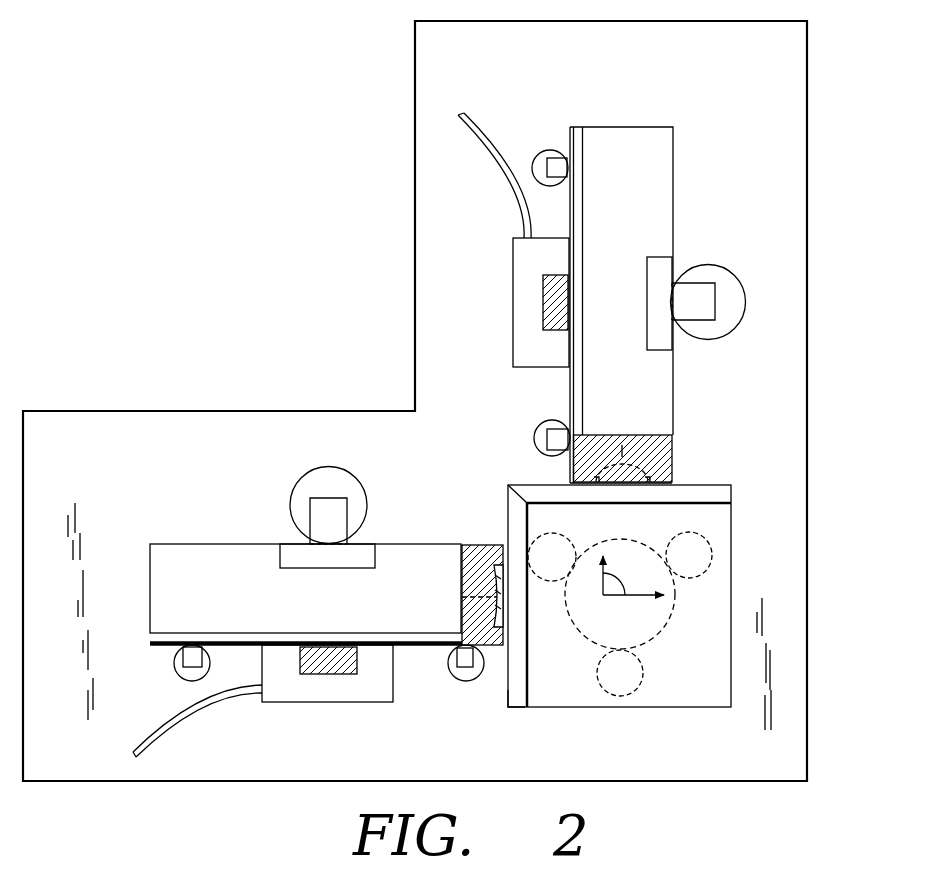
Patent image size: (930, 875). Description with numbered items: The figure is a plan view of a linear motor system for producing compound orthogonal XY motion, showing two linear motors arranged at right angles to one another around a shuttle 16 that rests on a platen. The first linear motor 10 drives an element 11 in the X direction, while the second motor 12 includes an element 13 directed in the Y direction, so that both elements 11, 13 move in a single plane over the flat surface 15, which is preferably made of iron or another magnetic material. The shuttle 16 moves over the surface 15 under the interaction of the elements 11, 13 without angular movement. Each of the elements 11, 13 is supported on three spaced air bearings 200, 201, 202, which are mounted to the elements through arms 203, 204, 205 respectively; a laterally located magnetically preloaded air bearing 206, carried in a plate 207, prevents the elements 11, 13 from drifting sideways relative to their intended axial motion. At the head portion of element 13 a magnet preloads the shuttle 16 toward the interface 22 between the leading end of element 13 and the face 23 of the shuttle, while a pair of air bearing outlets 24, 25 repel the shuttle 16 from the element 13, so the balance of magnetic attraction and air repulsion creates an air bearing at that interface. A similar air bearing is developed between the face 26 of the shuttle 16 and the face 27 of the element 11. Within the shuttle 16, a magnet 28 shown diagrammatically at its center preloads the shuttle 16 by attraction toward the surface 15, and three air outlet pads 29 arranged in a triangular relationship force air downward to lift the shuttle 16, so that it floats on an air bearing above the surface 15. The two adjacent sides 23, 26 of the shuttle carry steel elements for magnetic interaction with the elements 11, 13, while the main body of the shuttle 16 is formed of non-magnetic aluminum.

The first linear motor 10 is at (189, 532).
The element 11 is at (477, 544).
The second motor 12 is at (681, 164).
The element 13 is at (570, 470).
The flat surface 15 is at (773, 75).
The shuttle 16 is at (568, 692).
The interface 22 is at (693, 487).
The face 23 is at (511, 486).
The air bearing outlet 24 is at (597, 470).
The air bearing outlet 25 is at (672, 453).
The face 26 is at (508, 705).
The face 27 is at (505, 568).
The magnet 28 is at (658, 623).
The air outlet pads 29 is at (550, 548).
The air bearing 200 is at (710, 267).
The air bearing 201 is at (550, 150).
The air bearing 202 is at (534, 428).
The arm 203 is at (713, 310).
The arm 204 is at (547, 170).
The arm 205 is at (547, 440).
The magnetically preloaded air bearing 206 is at (543, 320).
The plate 207 is at (513, 273).